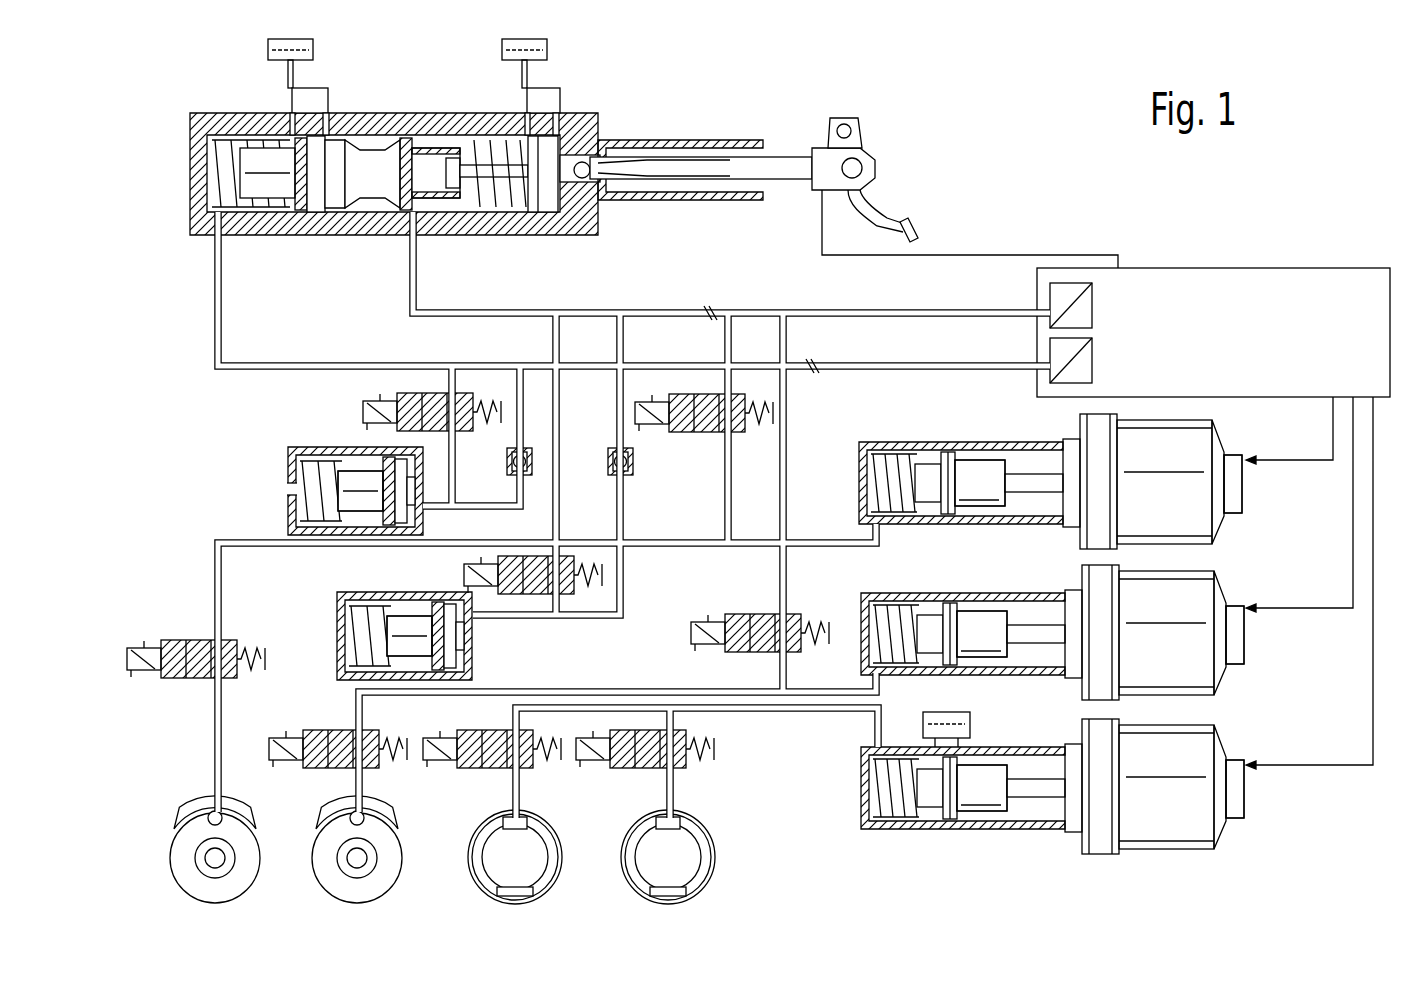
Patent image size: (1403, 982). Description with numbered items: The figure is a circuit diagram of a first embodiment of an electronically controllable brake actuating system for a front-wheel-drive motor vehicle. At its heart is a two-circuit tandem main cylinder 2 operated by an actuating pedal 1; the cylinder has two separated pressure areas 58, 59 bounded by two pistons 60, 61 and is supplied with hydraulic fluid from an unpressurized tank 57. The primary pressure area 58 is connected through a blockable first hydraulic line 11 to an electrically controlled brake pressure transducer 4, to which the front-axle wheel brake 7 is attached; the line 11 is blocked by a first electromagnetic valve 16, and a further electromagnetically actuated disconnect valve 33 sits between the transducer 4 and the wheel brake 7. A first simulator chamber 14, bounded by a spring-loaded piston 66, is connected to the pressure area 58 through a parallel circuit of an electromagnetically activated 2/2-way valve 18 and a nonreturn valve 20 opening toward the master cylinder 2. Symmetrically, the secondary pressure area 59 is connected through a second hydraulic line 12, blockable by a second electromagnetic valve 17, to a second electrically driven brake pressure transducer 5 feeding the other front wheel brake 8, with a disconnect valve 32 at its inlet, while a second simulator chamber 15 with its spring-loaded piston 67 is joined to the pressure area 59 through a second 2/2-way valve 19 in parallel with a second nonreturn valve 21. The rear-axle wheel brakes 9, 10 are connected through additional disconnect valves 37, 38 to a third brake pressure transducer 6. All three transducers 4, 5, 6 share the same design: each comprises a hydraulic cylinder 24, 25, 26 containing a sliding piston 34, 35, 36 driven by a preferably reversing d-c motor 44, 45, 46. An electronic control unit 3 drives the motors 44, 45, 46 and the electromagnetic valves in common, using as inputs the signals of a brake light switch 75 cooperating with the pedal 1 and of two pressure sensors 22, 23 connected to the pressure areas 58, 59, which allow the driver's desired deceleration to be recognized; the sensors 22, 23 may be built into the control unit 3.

The actuating pedal 1 is at (913, 230).
The tandem main cylinder 2 is at (238, 108).
The electronic control unit 3 is at (1302, 295).
The brake pressure transducer 4 is at (1084, 604).
The brake pressure transducer 5 is at (1080, 446).
The brake pressure transducer 6 is at (1077, 774).
The wheel brake 7 is at (332, 815).
The wheel brake 8 is at (192, 812).
The wheel brake 9 is at (563, 856).
The wheel brake 10 is at (716, 856).
The first hydraulic line 11 is at (420, 282).
The second hydraulic line 12 is at (226, 290).
The first simulator chamber 14 is at (436, 615).
The second simulator chamber 15 is at (388, 464).
The first electromagnetic valve 16 is at (797, 612).
The second electromagnetic valve 17 is at (742, 432).
The 2/2-way valve 18 is at (566, 595).
The second 2/2-way valve 19 is at (462, 392).
The nonreturn valve 20 is at (632, 465).
The second nonreturn valve 21 is at (507, 462).
The pressure sensor 22 is at (1097, 300).
The pressure sensor 23 is at (1097, 356).
The hydraulic cylinder 24 is at (880, 437).
The hydraulic cylinder 25 is at (887, 590).
The hydraulic cylinder 26 is at (893, 836).
The disconnect valve 32 is at (232, 640).
The disconnect valve 33 is at (333, 730).
The sliding piston 34 is at (975, 465).
The sliding piston 35 is at (976, 612).
The sliding piston 36 is at (947, 806).
The disconnect valve 37 is at (487, 770).
The disconnect valve 38 is at (640, 770).
The d-c motor 44 is at (1226, 446).
The d-c motor 45 is at (1228, 594).
The d-c motor 46 is at (1230, 746).
The unpressurized tank 57 is at (498, 52).
The first pressure area 58 is at (498, 212).
The second pressure area 59 is at (212, 165).
The piston 60 is at (557, 175).
The piston 61 is at (325, 215).
The spring-loaded piston 66 is at (400, 620).
The spring-loaded piston 67 is at (350, 488).
The brake light switch 75 is at (822, 148).